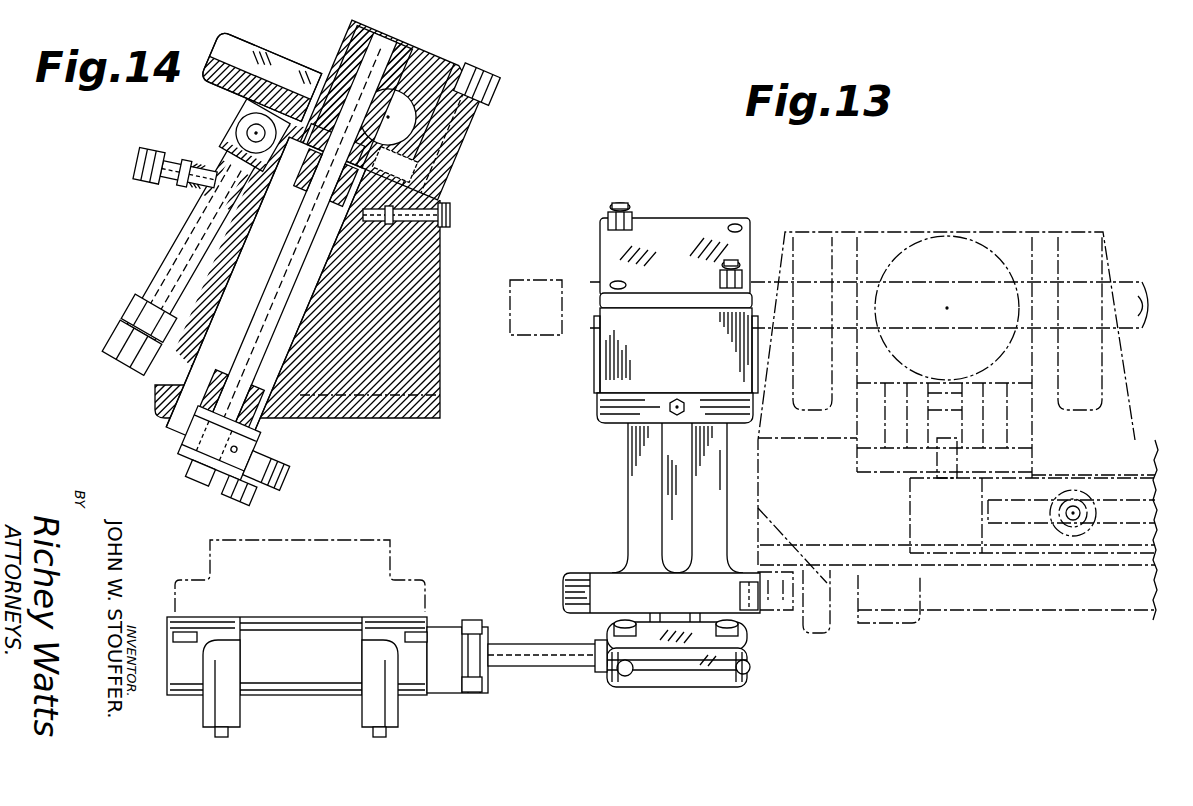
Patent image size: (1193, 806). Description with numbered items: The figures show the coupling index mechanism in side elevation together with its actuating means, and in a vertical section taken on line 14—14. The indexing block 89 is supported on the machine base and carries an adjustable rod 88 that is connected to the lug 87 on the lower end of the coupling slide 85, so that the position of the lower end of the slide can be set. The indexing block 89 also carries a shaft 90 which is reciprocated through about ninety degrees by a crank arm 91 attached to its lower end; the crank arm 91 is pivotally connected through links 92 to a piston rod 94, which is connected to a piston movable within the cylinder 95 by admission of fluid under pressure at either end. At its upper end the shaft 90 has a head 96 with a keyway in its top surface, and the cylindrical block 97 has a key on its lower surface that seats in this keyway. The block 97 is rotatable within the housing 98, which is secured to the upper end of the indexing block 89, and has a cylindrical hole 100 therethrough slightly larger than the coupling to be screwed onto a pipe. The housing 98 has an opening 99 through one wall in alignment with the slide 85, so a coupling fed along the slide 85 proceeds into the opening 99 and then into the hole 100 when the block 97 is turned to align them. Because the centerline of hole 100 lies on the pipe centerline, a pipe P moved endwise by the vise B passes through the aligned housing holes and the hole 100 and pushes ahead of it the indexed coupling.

In FIG. 14, the coupling slide 85 is at (215, 85).
In FIG. 14, the lug 87 is at (247, 107).
In FIG. 14, the adjustable rod 88 is at (208, 220).
In FIG. 14, the indexing block 89 is at (150, 272).
In FIG. 14, the shaft 90 is at (263, 343).
In FIG. 14, the crank arm 91 is at (228, 468).
In FIG. 13, the crank arm 91 is at (742, 611).
In FIG. 14, the links 92 is at (250, 490).
In FIG. 13, the links 92 is at (672, 655).
In FIG. 13, the piston rod 94 is at (538, 657).
In FIG. 13, the cylinder 95 is at (298, 643).
In FIG. 14, the head 96 is at (403, 165).
In FIG. 14, the cylindrical block 97 is at (400, 110).
In FIG. 14, the housing 98 is at (473, 120).
In FIG. 14, the opening 99 is at (335, 80).
In FIG. 14, the cylindrical hole 100 is at (440, 70).
In FIG. 13, the section line 14— 14 is at (675, 230).
In FIG. 13, the pipe P is at (578, 292).
In FIG. 13, the vise B is at (1042, 237).